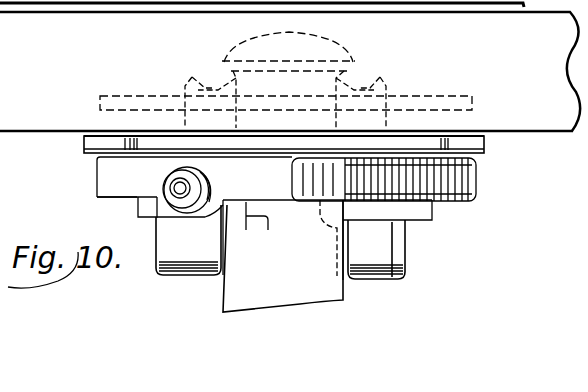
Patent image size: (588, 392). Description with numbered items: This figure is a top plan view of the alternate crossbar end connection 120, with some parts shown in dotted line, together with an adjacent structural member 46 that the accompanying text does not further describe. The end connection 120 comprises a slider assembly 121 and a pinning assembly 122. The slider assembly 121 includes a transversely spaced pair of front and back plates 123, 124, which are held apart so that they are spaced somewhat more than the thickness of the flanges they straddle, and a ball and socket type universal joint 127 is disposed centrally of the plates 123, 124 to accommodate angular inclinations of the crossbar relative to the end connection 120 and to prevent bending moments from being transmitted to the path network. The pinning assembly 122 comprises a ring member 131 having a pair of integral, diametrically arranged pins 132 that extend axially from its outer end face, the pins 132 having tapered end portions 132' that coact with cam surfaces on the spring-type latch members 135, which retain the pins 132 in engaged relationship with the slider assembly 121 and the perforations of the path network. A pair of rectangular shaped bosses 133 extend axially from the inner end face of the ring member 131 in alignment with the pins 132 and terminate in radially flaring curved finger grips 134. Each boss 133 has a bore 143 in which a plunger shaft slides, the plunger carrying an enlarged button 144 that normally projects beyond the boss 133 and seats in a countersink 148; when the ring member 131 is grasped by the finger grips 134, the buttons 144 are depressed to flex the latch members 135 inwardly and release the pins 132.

The sheet 46 is at (318, 291).
The crossbar end connection 120 is at (472, 218).
The slider assembly 121 is at (84, 146).
The pinning assembly 122 is at (481, 192).
The front plate 123 is at (485, 145).
The back plate 124 is at (455, 97).
The ball and socket type universal joint 127 is at (258, 38).
The ring member 131 is at (474, 170).
The pins 132 is at (285, 96).
The tapered end portions 132' is at (282, 83).
The rectangular shaped bosses 133 is at (240, 250).
The finger grips 134 is at (190, 262).
The spring-type latch members 135 is at (137, 205).
The bore 143 is at (208, 172).
The button 144 is at (168, 178).
The countersink 148 is at (218, 200).